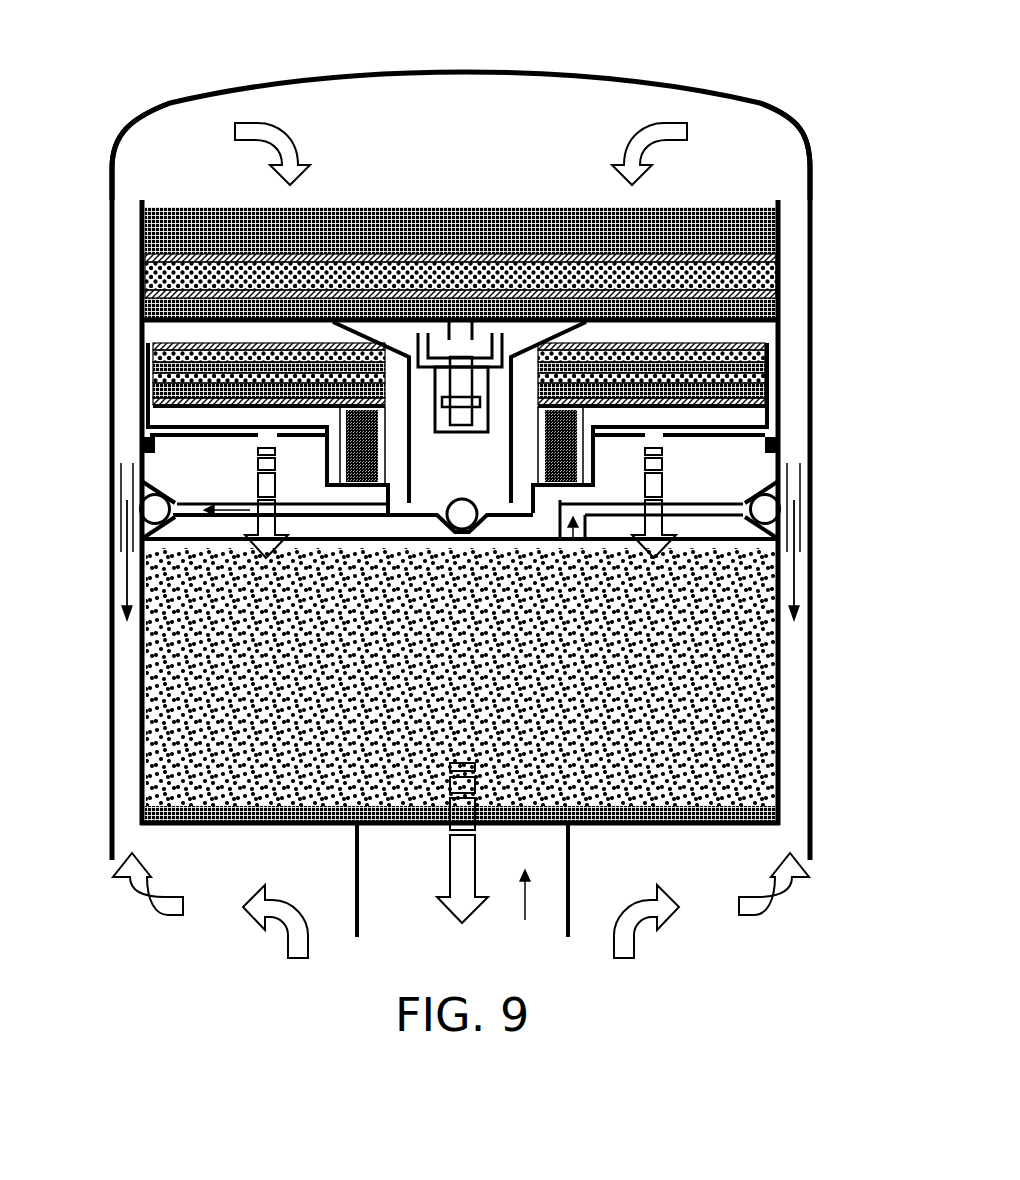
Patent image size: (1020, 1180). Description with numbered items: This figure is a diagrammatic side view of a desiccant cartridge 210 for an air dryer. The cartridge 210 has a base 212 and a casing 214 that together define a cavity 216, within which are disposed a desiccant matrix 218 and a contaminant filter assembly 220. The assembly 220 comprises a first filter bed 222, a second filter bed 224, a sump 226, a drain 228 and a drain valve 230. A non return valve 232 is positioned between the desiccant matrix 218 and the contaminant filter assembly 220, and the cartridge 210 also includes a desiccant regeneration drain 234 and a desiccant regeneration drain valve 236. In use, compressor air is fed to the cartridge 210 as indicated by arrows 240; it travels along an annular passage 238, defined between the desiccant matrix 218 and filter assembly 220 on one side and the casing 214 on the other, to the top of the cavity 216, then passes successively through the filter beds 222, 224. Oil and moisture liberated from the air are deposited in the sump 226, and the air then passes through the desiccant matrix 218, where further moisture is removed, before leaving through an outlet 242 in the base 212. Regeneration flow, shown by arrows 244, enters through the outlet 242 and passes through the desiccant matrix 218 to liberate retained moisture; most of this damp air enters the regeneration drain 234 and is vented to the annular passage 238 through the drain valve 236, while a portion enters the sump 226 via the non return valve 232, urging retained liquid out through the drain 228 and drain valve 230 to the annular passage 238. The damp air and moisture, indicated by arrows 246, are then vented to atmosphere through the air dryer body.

The desiccant cartridge 210 is at (716, 62).
The base 212 is at (717, 826).
The casing 214 is at (812, 442).
The cavity 216 is at (140, 144).
The desiccant matrix 218 is at (148, 690).
The contaminant filter assembly 220 is at (760, 144).
The first filter bed 222 is at (150, 232).
The second filter bed 224 is at (766, 374).
The sump 226 is at (484, 522).
The drain 228 is at (183, 500).
The drain valve 230 is at (148, 508).
The non return valve 232 is at (440, 520).
The desiccant regeneration drain 234 is at (720, 501).
The desiccant regeneration drain valve 236 is at (774, 510).
The annular passage 238 is at (508, 345).
The arrows 240 is at (250, 122).
The outlet 242 is at (355, 876).
The arrows 244 is at (232, 502).
The arrows 246 is at (112, 594).